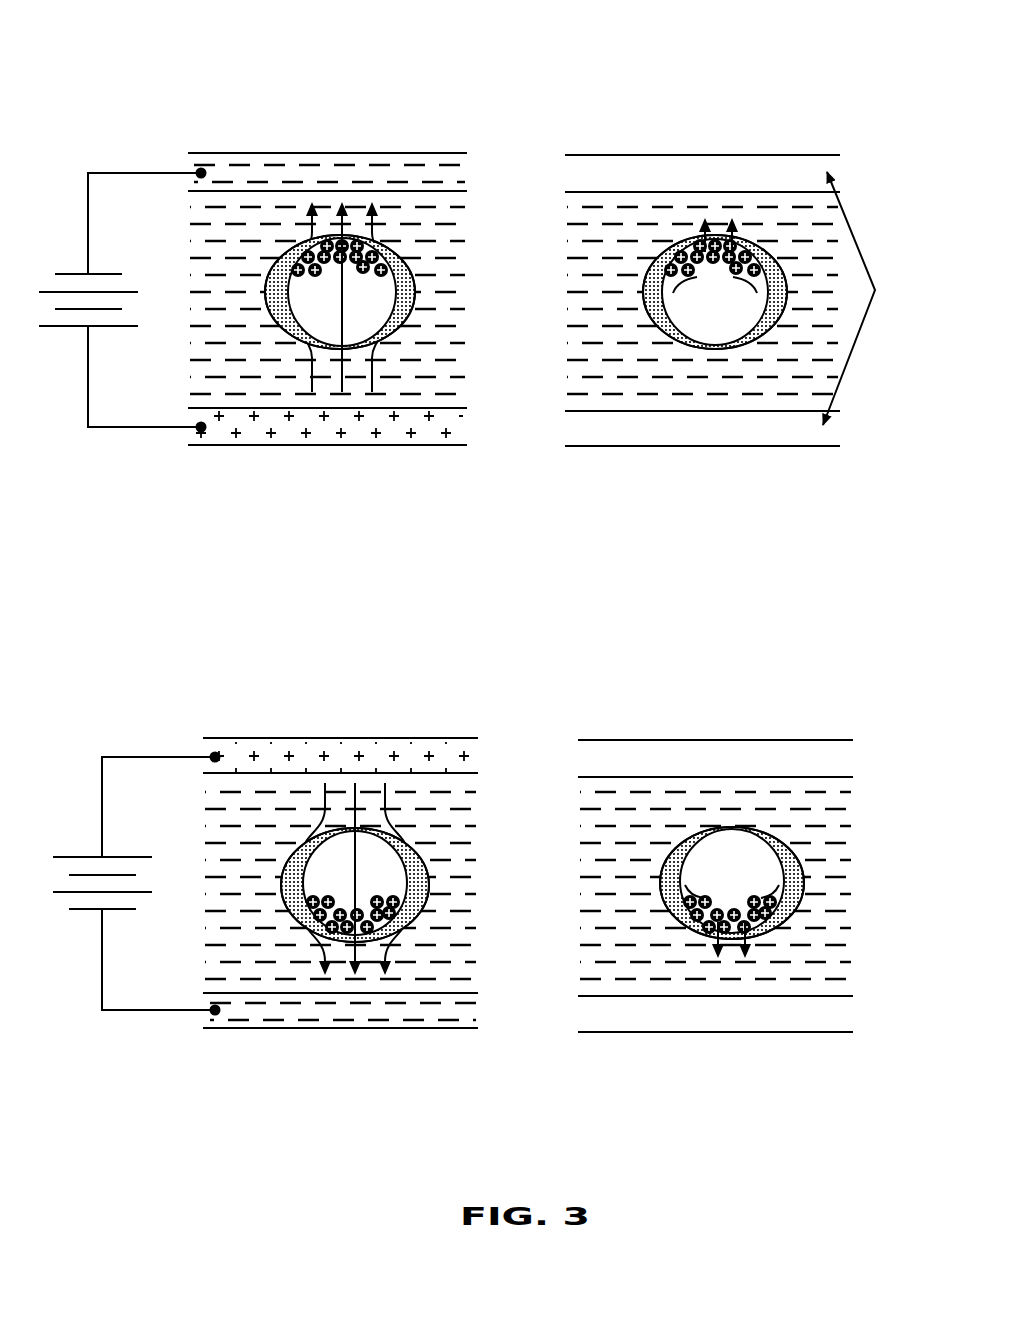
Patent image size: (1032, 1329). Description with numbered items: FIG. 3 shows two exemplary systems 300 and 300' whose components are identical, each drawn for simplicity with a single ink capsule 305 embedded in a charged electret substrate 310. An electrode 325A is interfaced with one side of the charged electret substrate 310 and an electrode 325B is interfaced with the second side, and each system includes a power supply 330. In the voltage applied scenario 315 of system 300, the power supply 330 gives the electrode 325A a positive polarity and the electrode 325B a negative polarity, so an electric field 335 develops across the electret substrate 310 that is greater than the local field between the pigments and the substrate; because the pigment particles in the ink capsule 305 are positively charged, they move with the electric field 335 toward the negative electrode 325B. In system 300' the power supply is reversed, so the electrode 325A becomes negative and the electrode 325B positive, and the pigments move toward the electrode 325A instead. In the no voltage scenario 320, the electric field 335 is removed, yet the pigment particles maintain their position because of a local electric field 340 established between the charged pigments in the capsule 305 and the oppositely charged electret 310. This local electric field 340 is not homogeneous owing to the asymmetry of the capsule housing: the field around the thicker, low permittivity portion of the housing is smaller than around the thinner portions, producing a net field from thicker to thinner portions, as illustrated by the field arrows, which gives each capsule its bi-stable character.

The system 300 is at (663, 223).
The system 300' is at (672, 820).
The ink capsule 305 is at (415, 290).
The charged electret substrate 310 is at (433, 342).
The voltage applied scenario 315 is at (327, 389).
The no voltage scenario 320 is at (714, 391).
The electrode 325A is at (190, 447).
The electrode 325B is at (197, 153).
The power supply 330 is at (55, 330).
The electric field 335 is at (425, 1048).
The local electric field 340 is at (730, 210).